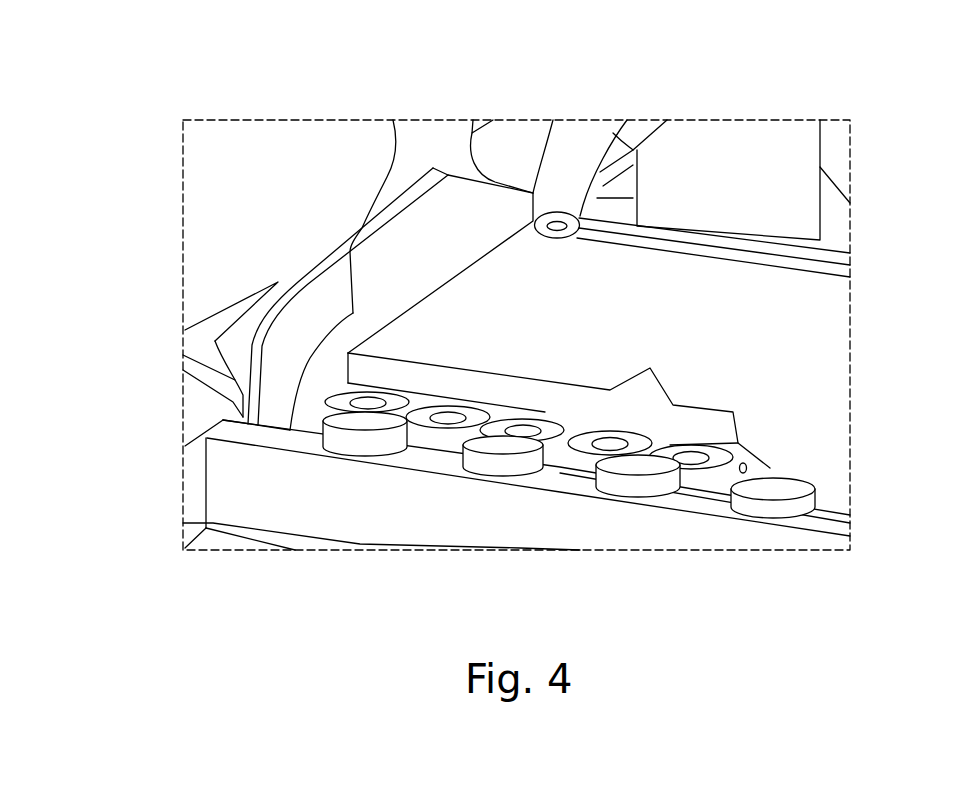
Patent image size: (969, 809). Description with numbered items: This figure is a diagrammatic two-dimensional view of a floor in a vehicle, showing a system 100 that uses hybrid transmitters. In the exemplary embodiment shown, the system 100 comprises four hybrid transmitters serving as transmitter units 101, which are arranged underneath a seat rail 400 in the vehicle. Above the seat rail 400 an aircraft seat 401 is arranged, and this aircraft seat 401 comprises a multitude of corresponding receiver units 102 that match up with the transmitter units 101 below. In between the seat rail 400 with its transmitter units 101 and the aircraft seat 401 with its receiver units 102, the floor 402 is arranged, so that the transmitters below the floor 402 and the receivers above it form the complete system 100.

The system 100 is at (861, 103).
The transmitter units 101 is at (352, 446).
The receiver units 102 is at (368, 403).
The seat rail 400 is at (212, 487).
The aircraft seat 401 is at (421, 120).
The floor 402 is at (207, 430).